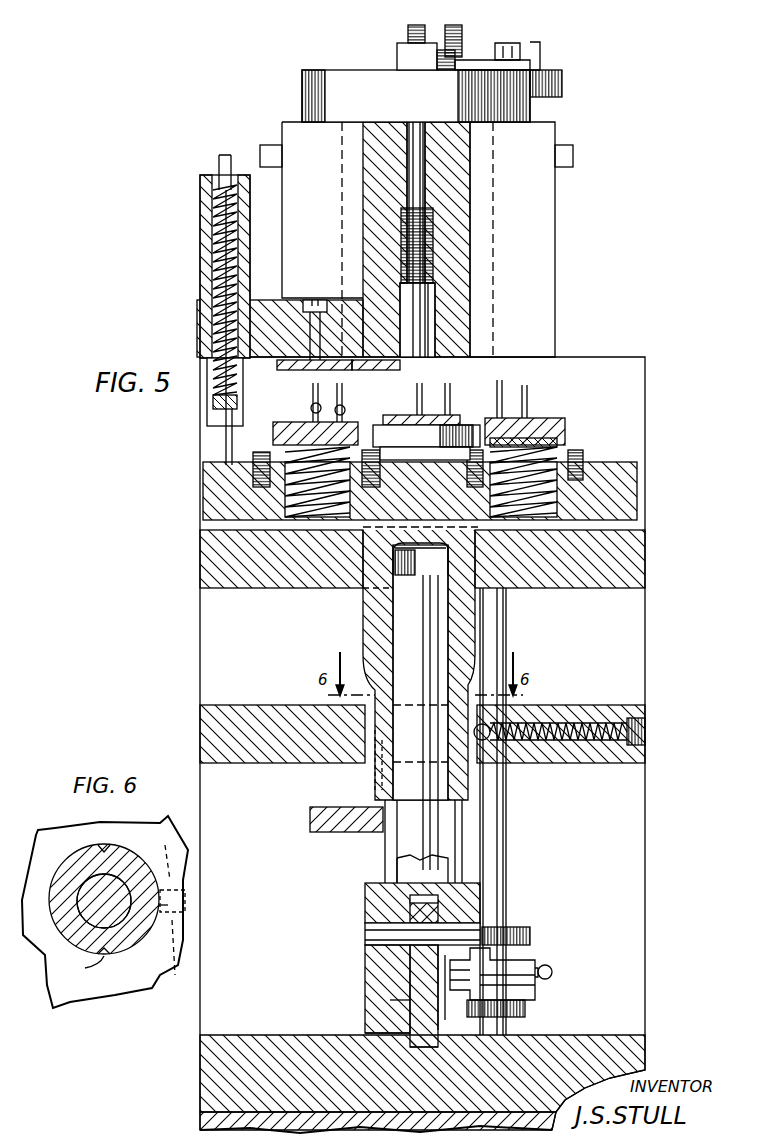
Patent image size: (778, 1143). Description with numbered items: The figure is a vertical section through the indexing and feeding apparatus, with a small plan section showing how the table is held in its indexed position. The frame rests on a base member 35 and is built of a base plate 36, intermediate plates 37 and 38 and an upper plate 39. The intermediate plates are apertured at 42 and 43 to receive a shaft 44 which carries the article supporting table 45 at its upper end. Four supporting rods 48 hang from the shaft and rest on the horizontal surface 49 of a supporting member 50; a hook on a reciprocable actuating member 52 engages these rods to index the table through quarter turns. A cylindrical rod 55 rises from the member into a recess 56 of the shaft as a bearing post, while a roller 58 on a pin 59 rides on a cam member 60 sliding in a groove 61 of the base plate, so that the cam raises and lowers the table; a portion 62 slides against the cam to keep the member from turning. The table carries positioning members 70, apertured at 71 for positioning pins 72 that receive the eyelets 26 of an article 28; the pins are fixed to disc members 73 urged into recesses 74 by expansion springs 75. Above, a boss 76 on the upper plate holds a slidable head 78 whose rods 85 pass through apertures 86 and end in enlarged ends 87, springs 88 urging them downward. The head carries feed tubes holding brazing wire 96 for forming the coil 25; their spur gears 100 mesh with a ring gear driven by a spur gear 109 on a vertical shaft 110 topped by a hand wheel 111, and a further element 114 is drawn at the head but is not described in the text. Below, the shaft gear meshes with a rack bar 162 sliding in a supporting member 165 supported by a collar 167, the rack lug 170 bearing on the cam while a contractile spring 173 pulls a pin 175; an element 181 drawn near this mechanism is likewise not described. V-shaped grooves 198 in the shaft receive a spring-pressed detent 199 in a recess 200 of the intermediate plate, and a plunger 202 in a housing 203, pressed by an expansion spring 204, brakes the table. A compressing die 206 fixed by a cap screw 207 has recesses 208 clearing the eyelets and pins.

In FIG. 5, the coil 25 is at (346, 410).
In FIG. 5, the eyelets 26 is at (458, 395).
In FIG. 5, the article 28 is at (283, 428).
In FIG. 5, the base member 35 is at (215, 1120).
In FIG. 5, the base plate 36 is at (212, 1072).
In FIG. 5, the intermediate plate 37 is at (210, 716).
In FIG. 6, the intermediate plate 37 is at (55, 992).
In FIG. 5, the intermediate plate 38 is at (200, 560).
In FIG. 5, the upper plate 39 is at (200, 328).
In FIG. 5, the aperture 42 is at (367, 570).
In FIG. 5, the aperture 43 is at (372, 770).
In FIG. 5, the shaft 44 is at (372, 627).
In FIG. 6, the shaft 44 is at (62, 860).
In FIG. 5, the article supporting table 45 is at (637, 494).
In FIG. 5, the supporting rods 48 is at (460, 835).
In FIG. 5, the horizontal surface 49 is at (372, 883).
In FIG. 5, the supporting member 50 is at (362, 906).
In FIG. 5, the actuating member 52 is at (312, 817).
In FIG. 5, the cylindrical rod 55 is at (435, 812).
In FIG. 6, the cylindrical rod 55 is at (128, 875).
In FIG. 5, the recess 56 is at (400, 608).
In FIG. 6, the recess 56 is at (90, 878).
In FIG. 5, the roller 58 is at (392, 955).
In FIG. 5, the pin 59 is at (378, 934).
In FIG. 5, the cam member 60 is at (392, 1003).
In FIG. 5, the groove 61 is at (420, 1025).
In FIG. 5, the portion 62 is at (378, 985).
In FIG. 5, the positioning members 70 is at (275, 437).
In FIG. 5, the apertures 71 is at (535, 425).
In FIG. 5, the positioning pins 72 is at (320, 388).
In FIG. 5, the disc members 73 is at (595, 426).
In FIG. 5, the recesses 74 is at (572, 450).
In FIG. 5, the expansion springs 75 is at (300, 515).
In FIG. 5, the boss 76 is at (556, 212).
In FIG. 5, the head 78 is at (300, 89).
In FIG. 5, the rods 85 is at (414, 190).
In FIG. 5, the apertures 86 is at (410, 160).
In FIG. 5, the enlarged ends 87 is at (427, 340).
In FIG. 5, the springs 88 is at (402, 215).
In FIG. 5, the brazing wire 96 is at (408, 36).
In FIG. 5, the spur gears 100 is at (458, 60).
In FIG. 5, the spur gear 109 is at (562, 85).
In FIG. 5, the vertical shaft 110 is at (506, 866).
In FIG. 5, the hand wheel 111 is at (522, 45).
In FIG. 5, the terminal block 114 is at (397, 56).
In FIG. 5, the rack bar 162 is at (500, 968).
In FIG. 5, the supporting member 165 is at (533, 990).
In FIG. 5, the collar 167 is at (515, 927).
In FIG. 5, the lug 170 is at (420, 975).
In FIG. 5, the contractile spring 173 is at (549, 980).
In FIG. 5, the pin 175 is at (552, 972).
In FIG. 5, the pin 181 is at (447, 1016).
In FIG. 5, the V-shaped grooves 198 is at (367, 785).
In FIG. 6, the V-shaped grooves 198 is at (96, 970).
In FIG. 5, the spring-pressed detent 199 is at (490, 725).
In FIG. 6, the spring-pressed detent 199 is at (168, 966).
In FIG. 5, the recess 200 is at (612, 722).
In FIG. 6, the recess 200 is at (164, 901).
In FIG. 5, the plunger 202 is at (226, 445).
In FIG. 5, the housing 203 is at (200, 206).
In FIG. 5, the expansion spring 204 is at (222, 238).
In FIG. 5, the compressing die 206 is at (283, 372).
In FIG. 5, the cap screw 207 is at (322, 288).
In FIG. 5, the recesses 208 is at (338, 370).